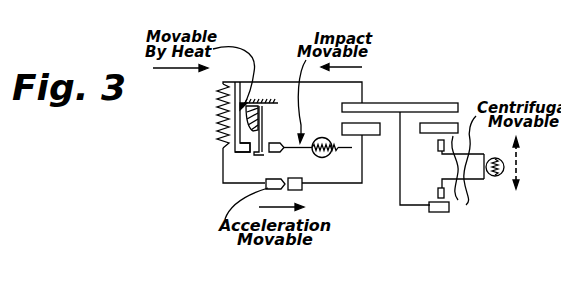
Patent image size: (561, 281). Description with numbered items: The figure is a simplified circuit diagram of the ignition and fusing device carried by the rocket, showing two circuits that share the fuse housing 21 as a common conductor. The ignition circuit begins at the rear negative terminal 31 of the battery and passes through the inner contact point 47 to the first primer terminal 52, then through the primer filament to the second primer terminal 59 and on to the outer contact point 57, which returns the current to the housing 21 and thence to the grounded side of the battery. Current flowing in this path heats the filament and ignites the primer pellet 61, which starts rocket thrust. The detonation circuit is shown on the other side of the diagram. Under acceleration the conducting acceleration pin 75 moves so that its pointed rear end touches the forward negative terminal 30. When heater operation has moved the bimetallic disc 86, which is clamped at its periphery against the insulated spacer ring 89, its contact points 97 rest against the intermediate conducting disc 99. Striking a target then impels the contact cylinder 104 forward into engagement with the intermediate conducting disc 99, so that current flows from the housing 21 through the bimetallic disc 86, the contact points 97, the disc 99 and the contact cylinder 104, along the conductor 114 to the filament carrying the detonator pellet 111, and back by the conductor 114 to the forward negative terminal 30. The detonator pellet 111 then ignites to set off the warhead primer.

The housing 21 is at (382, 104).
The forward negative terminal 30 is at (302, 189).
The rear negative terminal 31 is at (456, 124).
The inner contact point 47 is at (437, 146).
The first primer terminal 52 is at (222, 164).
The outer contact point 57 is at (438, 192).
The second primer terminal 59 is at (459, 197).
The primer pellet 61 is at (496, 176).
The acceleration pin 75 is at (277, 178).
The bimetallic disc 86 is at (237, 83).
The insulated spacer ring 89 is at (249, 103).
The contact points 97 is at (248, 154).
The intermediate conducting disc 99 is at (261, 157).
The contact cylinder 104 is at (282, 143).
The detonator pellet 111 is at (322, 158).
The conductor 114 is at (352, 148).